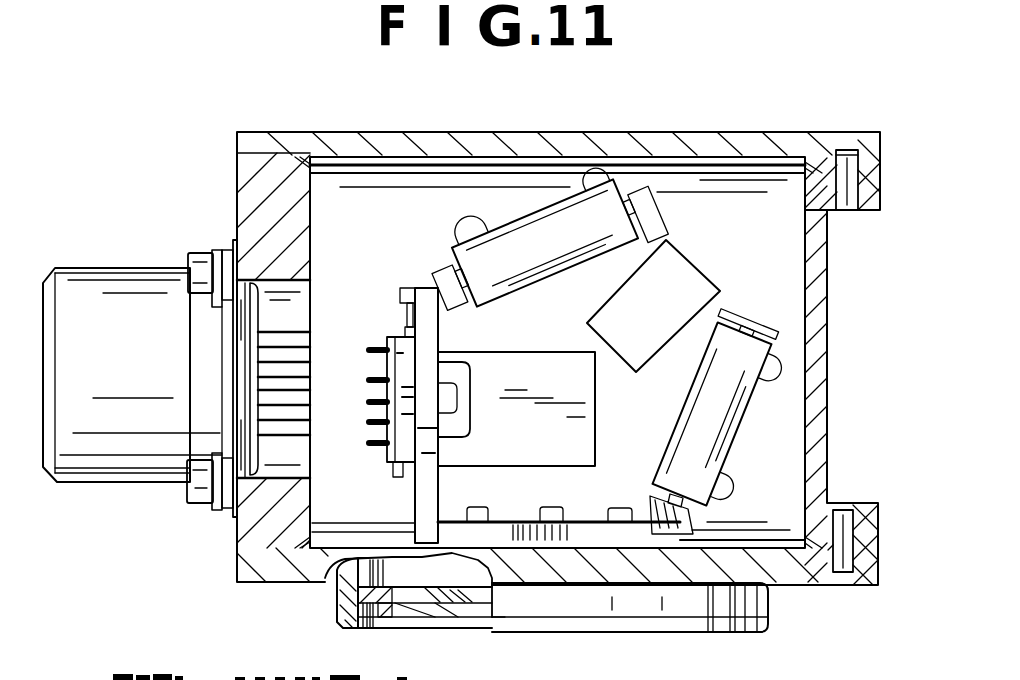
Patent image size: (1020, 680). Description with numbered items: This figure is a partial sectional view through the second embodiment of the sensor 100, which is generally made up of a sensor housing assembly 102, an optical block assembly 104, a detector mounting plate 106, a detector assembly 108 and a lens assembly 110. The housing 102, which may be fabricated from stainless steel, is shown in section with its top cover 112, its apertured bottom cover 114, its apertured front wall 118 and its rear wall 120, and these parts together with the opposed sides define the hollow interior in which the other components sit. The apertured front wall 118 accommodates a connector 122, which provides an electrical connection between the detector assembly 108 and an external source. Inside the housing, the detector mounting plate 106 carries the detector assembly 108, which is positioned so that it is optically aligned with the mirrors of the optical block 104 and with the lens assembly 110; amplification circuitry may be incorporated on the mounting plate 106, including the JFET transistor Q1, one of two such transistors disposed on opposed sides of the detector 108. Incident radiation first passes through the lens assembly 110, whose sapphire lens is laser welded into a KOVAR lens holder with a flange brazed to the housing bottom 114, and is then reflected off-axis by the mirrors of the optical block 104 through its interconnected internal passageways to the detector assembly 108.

The sensor 100 is at (725, 125).
The sensor housing assembly 102 is at (840, 437).
The optical block assembly 104 is at (653, 303).
The detector mounting plate 106 is at (403, 307).
The detector assembly 108 is at (470, 362).
The JFET transistor Q1 is at (469, 406).
The lens assembly 110 is at (457, 631).
The top cover 112 is at (333, 128).
The apertured bottom cover 114 is at (787, 587).
The apertured front wall 118 is at (233, 200).
The rear wall 120 is at (828, 340).
The connector 122 is at (117, 293).